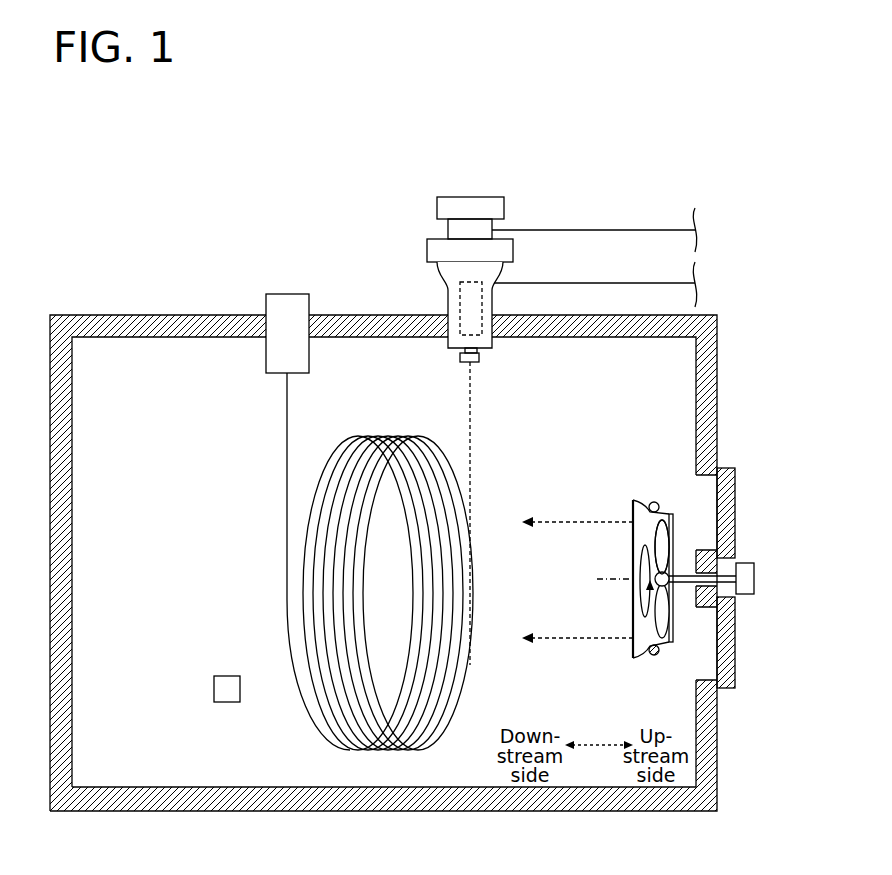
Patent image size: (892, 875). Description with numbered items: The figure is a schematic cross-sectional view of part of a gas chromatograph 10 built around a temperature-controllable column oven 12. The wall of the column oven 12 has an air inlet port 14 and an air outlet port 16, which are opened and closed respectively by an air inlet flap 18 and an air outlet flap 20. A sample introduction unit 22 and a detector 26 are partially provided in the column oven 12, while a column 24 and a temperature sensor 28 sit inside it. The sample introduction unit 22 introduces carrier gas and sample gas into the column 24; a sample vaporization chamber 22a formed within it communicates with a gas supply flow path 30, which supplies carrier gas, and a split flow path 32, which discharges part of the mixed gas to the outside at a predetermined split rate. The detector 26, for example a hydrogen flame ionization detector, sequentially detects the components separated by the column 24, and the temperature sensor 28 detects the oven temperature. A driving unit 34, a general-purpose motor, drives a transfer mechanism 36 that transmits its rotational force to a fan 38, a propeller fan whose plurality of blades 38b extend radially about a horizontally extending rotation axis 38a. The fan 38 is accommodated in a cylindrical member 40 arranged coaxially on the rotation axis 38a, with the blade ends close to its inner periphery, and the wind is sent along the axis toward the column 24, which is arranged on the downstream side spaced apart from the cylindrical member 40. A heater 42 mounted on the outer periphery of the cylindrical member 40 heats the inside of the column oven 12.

The gas chromatograph 10 is at (246, 205).
The column oven 12 is at (100, 315).
The air inlet port 14 is at (707, 637).
The air outlet port 16 is at (707, 502).
The air inlet flap 18 is at (736, 642).
The air outlet flap 20 is at (736, 494).
The sample introduction unit 22 is at (505, 210).
The sample vaporization chamber 22a is at (460, 303).
The column 24 is at (298, 711).
The detector 26 is at (266, 310).
The temperature sensor 28 is at (214, 688).
The gas supply flow path 30 is at (611, 230).
The split flow path 32 is at (611, 283).
The driving unit 34 is at (755, 575).
The transfer mechanism 36 is at (690, 587).
The fan 38 is at (669, 573).
The rotation axis 38a is at (612, 579).
The blades 38b is at (667, 512).
The cylindrical member 40 is at (624, 497).
The heater 42 is at (650, 653).